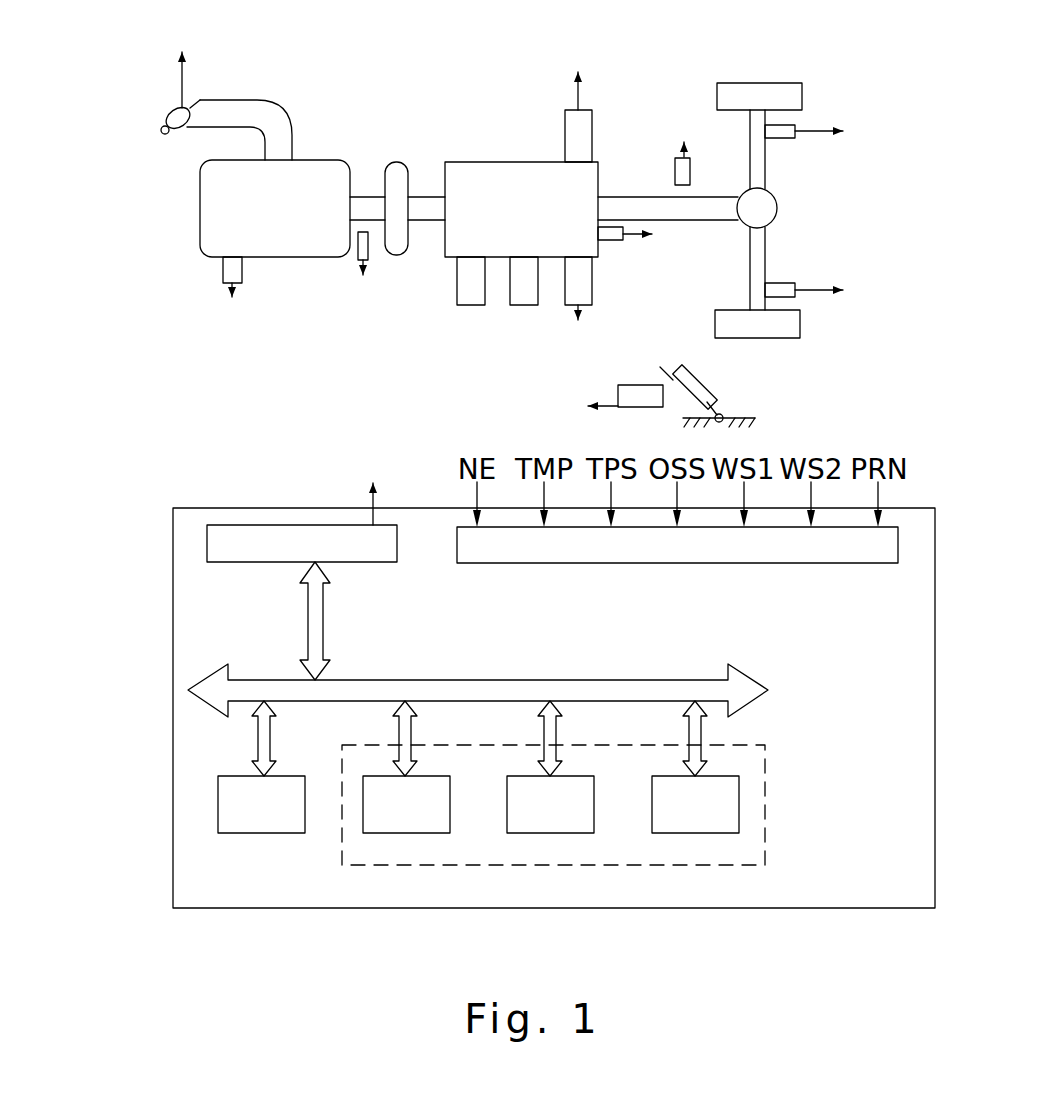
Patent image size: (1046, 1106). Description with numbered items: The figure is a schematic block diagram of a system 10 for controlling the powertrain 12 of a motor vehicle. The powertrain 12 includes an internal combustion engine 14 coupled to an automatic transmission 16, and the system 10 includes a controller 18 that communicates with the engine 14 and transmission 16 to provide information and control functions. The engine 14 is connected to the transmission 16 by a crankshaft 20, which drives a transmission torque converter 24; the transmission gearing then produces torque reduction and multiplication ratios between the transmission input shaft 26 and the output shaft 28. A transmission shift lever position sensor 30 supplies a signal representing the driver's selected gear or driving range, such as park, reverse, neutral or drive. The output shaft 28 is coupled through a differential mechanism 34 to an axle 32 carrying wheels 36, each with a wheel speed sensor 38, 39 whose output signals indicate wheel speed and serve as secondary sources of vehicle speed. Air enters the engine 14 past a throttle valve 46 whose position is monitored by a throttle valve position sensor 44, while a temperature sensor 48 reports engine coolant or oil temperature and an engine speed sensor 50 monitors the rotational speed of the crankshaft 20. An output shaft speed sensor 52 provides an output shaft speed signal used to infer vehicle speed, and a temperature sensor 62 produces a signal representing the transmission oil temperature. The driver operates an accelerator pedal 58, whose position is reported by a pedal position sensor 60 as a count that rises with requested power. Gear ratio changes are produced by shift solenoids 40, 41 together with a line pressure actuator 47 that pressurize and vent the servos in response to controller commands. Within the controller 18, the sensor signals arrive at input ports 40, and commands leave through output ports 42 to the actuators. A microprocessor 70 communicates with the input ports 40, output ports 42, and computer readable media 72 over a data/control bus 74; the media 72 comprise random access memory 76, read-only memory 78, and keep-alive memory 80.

The system 10 is at (146, 491).
The powertrain 12 is at (397, 64).
The internal combustion engine 14 is at (200, 210).
The automatic transmission 16 is at (517, 162).
The controller 18 is at (173, 788).
The crankshaft 20 is at (368, 197).
The transmission torque converter 24 is at (405, 239).
The transmission input shaft 26 is at (428, 197).
The output shaft 28 is at (628, 197).
The transmission shift lever position sensor 30 is at (592, 124).
The axle 32 is at (768, 172).
The differential mechanism 34 is at (777, 202).
The wheels 36 is at (782, 83).
The wheel speed sensor 38 is at (784, 119).
The wheel speed sensor WS2 39 is at (774, 281).
The shift solenoid / input ports 40 is at (470, 305).
The shift solenoid 41 is at (525, 305).
The output ports 42 is at (273, 562).
The throttle valve position sensor 44 is at (181, 80).
The throttle valve 46 is at (190, 103).
The actuator 47 is at (593, 280).
The temperature sensor 48 is at (223, 270).
The engine speed sensor 50 is at (358, 252).
The output shaft speed sensor 52 is at (692, 182).
The accelerator pedal 58 is at (703, 383).
The pedal position sensor 60 is at (638, 385).
The temperature sensor 62 is at (615, 243).
The microprocessor 70 is at (245, 833).
The computer readable media 72 is at (763, 812).
The data/control bus 74 is at (453, 682).
The random access memory 76 is at (678, 833).
The read-only memory 78 is at (533, 833).
The keep-alive memory 80 is at (390, 833).